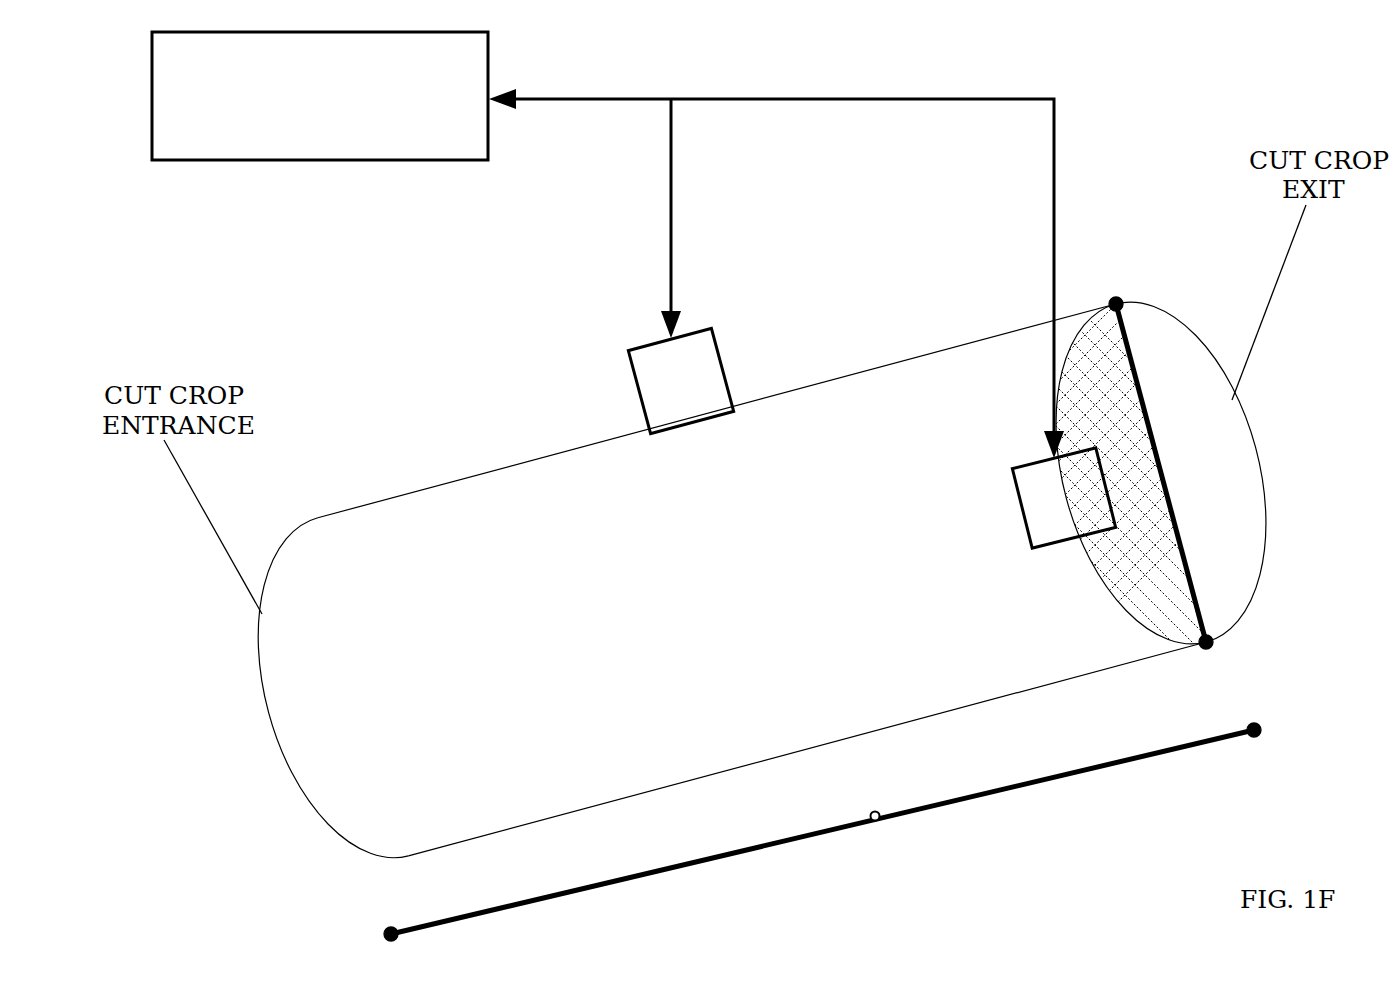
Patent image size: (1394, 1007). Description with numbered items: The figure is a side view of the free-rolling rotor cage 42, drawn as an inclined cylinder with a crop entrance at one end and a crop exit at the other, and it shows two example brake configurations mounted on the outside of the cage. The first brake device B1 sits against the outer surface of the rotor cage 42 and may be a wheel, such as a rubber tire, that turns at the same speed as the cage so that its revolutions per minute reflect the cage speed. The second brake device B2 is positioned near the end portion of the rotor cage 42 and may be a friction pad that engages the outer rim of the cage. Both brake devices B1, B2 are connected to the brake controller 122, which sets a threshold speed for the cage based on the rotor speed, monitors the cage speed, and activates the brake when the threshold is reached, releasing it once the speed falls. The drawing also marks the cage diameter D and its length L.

The free-rolling rotor cage 42 is at (486, 488).
The brake controller 122 is at (608, 245).
The brake device B1 is at (680, 380).
The brake device B2 is at (1063, 498).
The bale diameter D is at (1181, 544).
The bale length L is at (870, 823).